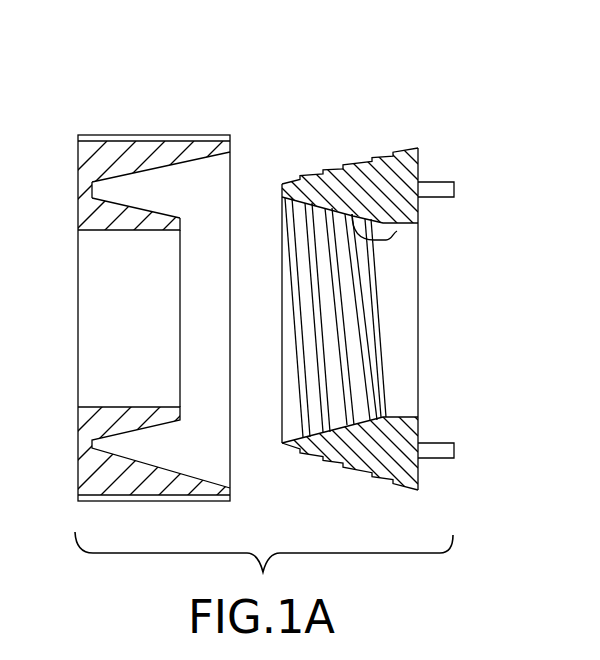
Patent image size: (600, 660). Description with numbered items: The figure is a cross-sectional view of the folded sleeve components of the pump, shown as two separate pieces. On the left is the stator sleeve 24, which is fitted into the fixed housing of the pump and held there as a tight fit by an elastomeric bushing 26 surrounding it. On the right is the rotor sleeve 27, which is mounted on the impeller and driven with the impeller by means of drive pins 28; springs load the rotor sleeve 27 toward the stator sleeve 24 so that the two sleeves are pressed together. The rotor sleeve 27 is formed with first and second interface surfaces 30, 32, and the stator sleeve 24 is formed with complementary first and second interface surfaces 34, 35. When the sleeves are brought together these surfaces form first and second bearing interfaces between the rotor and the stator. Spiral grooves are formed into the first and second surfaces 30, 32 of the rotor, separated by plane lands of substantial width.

The stator sleeve 24 is at (110, 118).
The elastomeric bushing 26 is at (213, 135).
The rotor sleeve 27 is at (315, 150).
The drive pins 28 is at (445, 182).
The first interface surface 30 is at (397, 231).
The second interface surface 32 is at (378, 160).
The first interface surface 34 is at (121, 202).
The second interface surface 35 is at (139, 174).